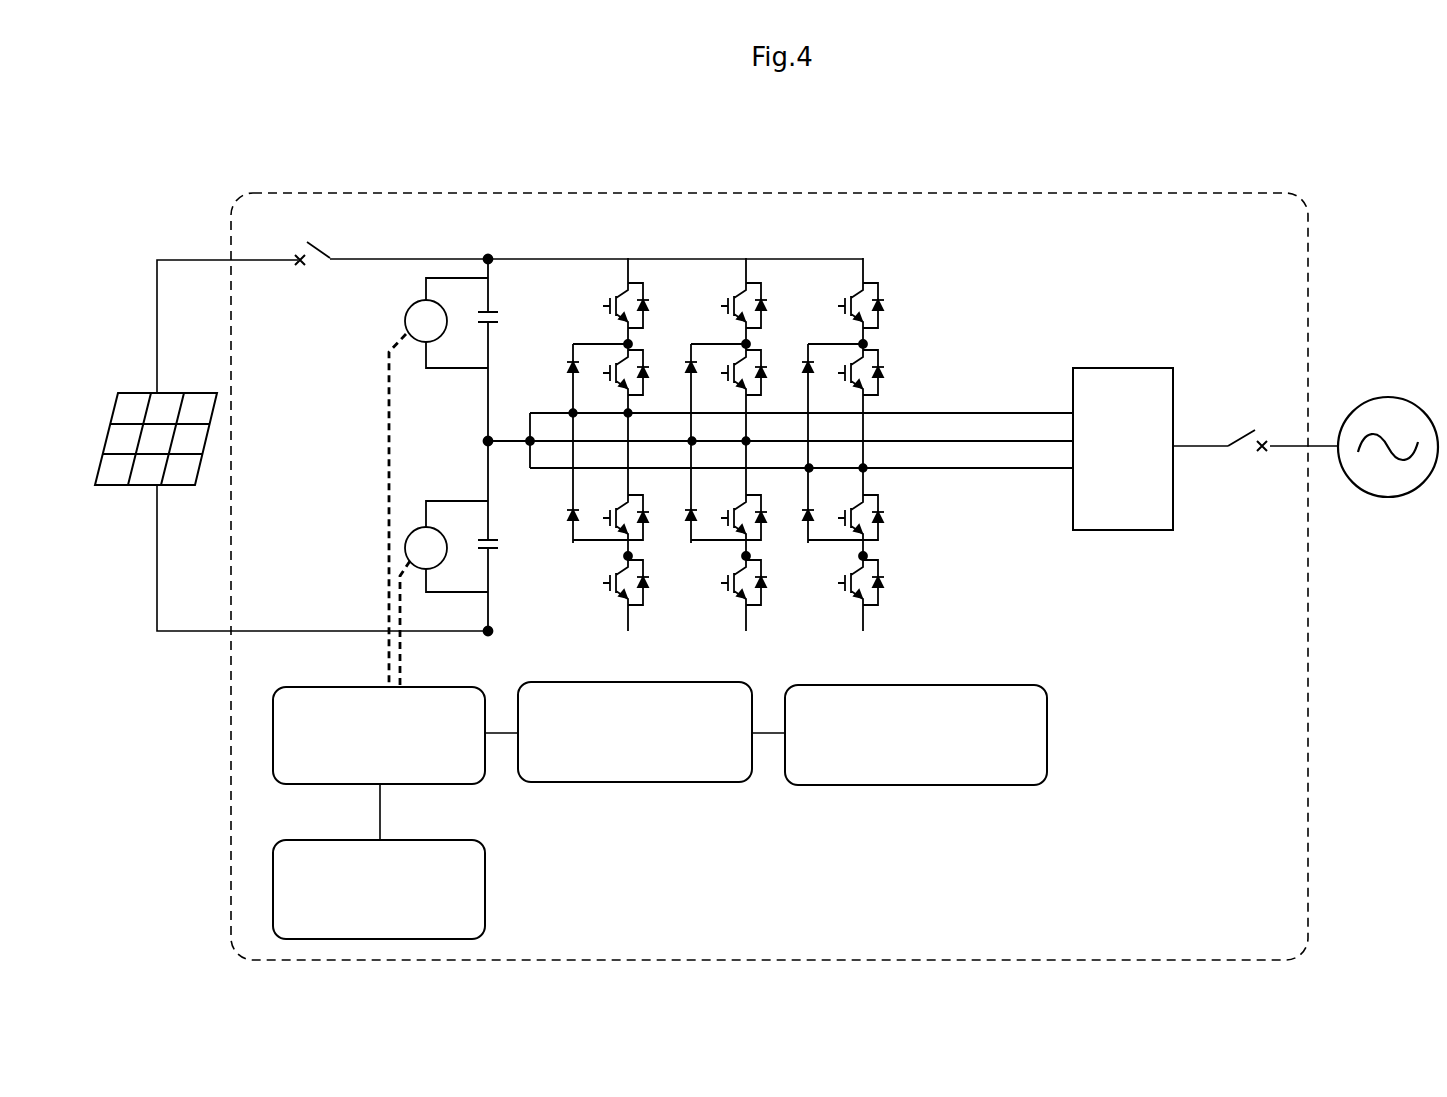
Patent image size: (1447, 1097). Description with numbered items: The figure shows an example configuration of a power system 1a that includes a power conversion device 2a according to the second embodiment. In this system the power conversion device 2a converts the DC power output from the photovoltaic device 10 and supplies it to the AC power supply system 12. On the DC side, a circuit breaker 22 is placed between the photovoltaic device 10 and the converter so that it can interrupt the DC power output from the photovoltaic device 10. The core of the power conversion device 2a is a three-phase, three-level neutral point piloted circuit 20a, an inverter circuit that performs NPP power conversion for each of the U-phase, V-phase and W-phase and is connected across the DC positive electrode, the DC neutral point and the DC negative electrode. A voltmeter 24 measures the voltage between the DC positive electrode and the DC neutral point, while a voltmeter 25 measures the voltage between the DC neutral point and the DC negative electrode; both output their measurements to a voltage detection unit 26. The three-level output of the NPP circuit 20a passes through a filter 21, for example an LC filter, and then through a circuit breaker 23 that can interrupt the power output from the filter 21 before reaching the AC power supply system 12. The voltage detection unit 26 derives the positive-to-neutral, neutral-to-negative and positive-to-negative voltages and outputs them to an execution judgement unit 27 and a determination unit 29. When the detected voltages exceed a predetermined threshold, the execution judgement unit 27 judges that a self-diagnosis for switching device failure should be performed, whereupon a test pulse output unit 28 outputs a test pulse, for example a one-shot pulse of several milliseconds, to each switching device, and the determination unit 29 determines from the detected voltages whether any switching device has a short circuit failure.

The power system 1a is at (1343, 317).
The power conversion device 2a is at (800, 193).
The photovoltaic device 10 is at (178, 392).
The AC power supply system 12 is at (1393, 398).
The three-level NPP circuit 20a is at (913, 295).
The filter 21 is at (1120, 368).
The circuit breaker 22 is at (318, 246).
The circuit breaker 23 is at (1254, 430).
The voltmeter 24 is at (405, 312).
The voltmeter 25 is at (447, 552).
The voltage detection unit 26 is at (343, 686).
The execution judgement unit 27 is at (643, 784).
The test pulse output unit 28 is at (945, 785).
The determination unit 29 is at (460, 840).